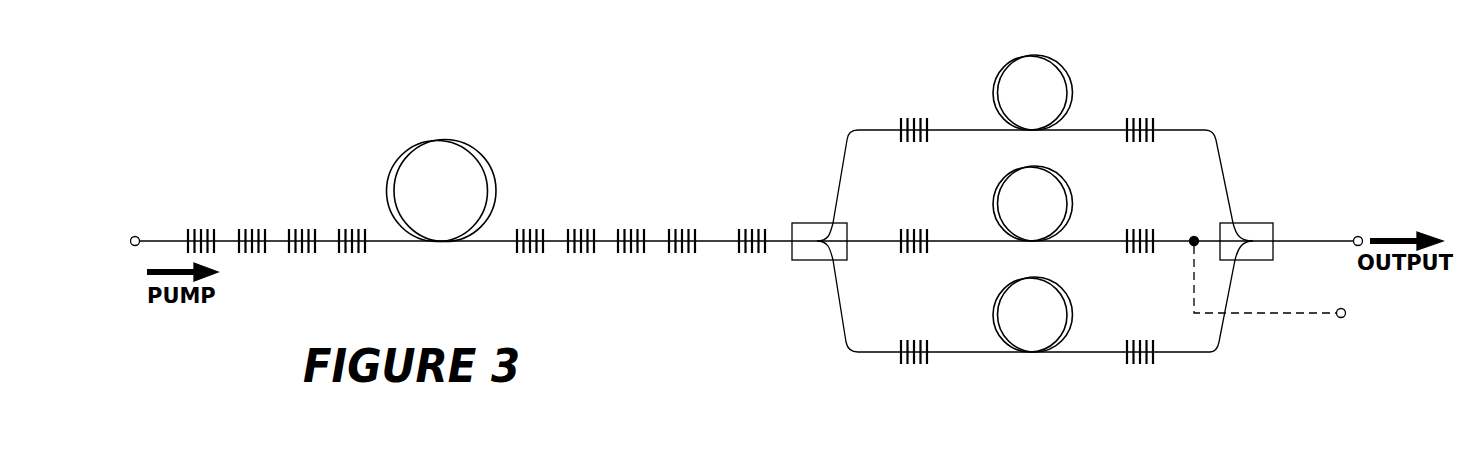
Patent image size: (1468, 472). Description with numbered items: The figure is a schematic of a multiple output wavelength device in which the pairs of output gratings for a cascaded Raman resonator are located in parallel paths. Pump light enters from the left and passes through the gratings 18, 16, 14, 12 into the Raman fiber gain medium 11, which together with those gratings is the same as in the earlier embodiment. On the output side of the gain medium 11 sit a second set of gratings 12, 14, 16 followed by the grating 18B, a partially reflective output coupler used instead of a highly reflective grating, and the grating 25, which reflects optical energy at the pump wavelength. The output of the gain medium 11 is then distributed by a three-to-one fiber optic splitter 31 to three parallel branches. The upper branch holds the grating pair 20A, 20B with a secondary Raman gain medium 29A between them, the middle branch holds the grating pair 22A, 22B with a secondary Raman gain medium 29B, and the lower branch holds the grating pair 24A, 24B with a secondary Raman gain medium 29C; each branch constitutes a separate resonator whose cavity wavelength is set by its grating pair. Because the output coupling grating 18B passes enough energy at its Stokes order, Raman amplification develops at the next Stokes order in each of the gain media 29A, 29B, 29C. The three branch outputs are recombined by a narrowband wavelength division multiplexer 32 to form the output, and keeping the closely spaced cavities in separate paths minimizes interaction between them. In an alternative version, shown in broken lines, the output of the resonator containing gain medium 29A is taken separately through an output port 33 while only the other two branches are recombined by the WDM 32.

The Raman fiber gain medium 11 is at (435, 137).
The grating 12 is at (352, 225).
The grating 14 is at (302, 225).
The grating 16 is at (257, 225).
The grating 18 is at (203, 224).
The output coupling grating 18B is at (683, 223).
The grating 25 is at (753, 223).
The three-to-one fiber optic splitter 31 is at (811, 219).
The narrowband wavelength division multiplexer (WDM) 32 is at (1270, 218).
The grating 20A is at (913, 113).
The grating 20B is at (1142, 112).
The grating 22A is at (913, 222).
The grating 22B is at (1142, 220).
The grating 24A is at (913, 333).
The grating 24B is at (1142, 333).
The secondary Raman gain medium 29A is at (1073, 77).
The secondary Raman gain medium 29B is at (1075, 190).
The secondary Raman gain medium 29C is at (1075, 300).
The output port 33 is at (1346, 318).